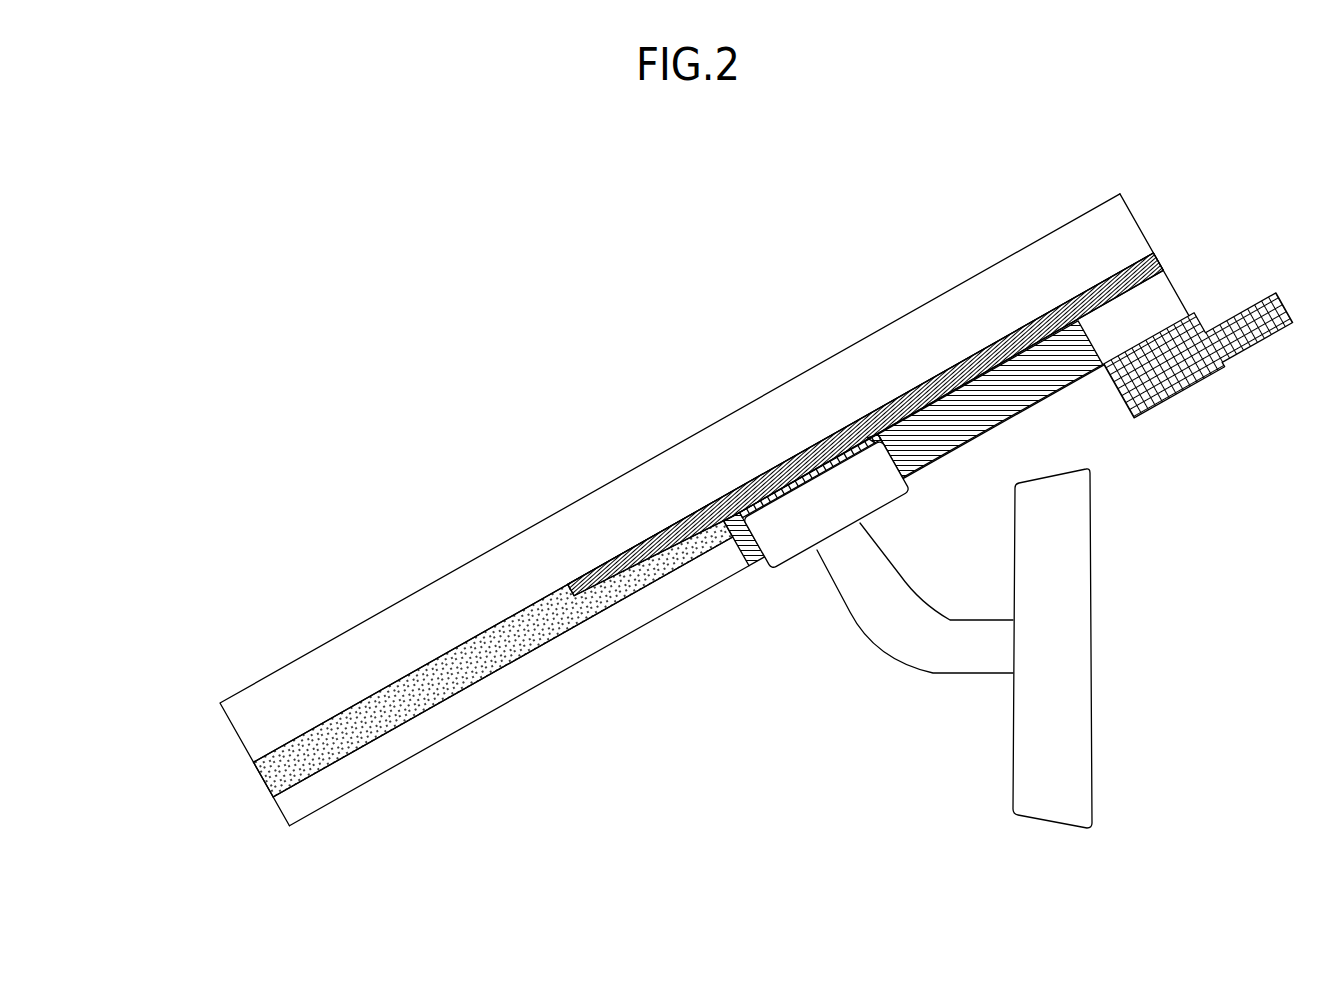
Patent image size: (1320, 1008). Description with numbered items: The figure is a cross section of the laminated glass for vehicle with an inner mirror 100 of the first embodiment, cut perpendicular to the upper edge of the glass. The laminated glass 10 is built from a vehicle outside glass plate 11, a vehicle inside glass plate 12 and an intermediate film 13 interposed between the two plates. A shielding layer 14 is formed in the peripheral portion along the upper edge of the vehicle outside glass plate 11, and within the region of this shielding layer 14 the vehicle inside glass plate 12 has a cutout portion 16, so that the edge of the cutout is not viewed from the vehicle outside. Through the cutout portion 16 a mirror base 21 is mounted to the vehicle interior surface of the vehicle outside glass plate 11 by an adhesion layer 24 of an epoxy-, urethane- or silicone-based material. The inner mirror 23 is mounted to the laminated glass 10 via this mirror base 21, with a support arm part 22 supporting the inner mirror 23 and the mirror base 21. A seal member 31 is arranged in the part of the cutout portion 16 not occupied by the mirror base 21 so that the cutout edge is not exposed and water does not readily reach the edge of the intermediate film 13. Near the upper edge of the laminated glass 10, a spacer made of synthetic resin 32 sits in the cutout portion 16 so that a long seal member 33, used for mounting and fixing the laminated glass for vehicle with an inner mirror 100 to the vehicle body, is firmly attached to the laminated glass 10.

The laminated glass for vehicle with an inner mirror 100 is at (1216, 186).
The laminated glass 10 is at (358, 602).
The vehicle outside glass plate 11 is at (225, 744).
The vehicle inside glass plate 12 is at (271, 829).
The intermediate film 13 is at (251, 793).
The shielding layer 14 is at (952, 342).
The cutout portion 16 is at (1055, 428).
The mirror base 21 is at (790, 586).
The support arm part 22 is at (913, 674).
The inner mirror 23 is at (1111, 613).
The adhesion layer 24 is at (902, 434).
The seal member 31 is at (873, 410).
The spacer made of synthetic resin 32 is at (1185, 276).
The long seal member 33 is at (1188, 402).